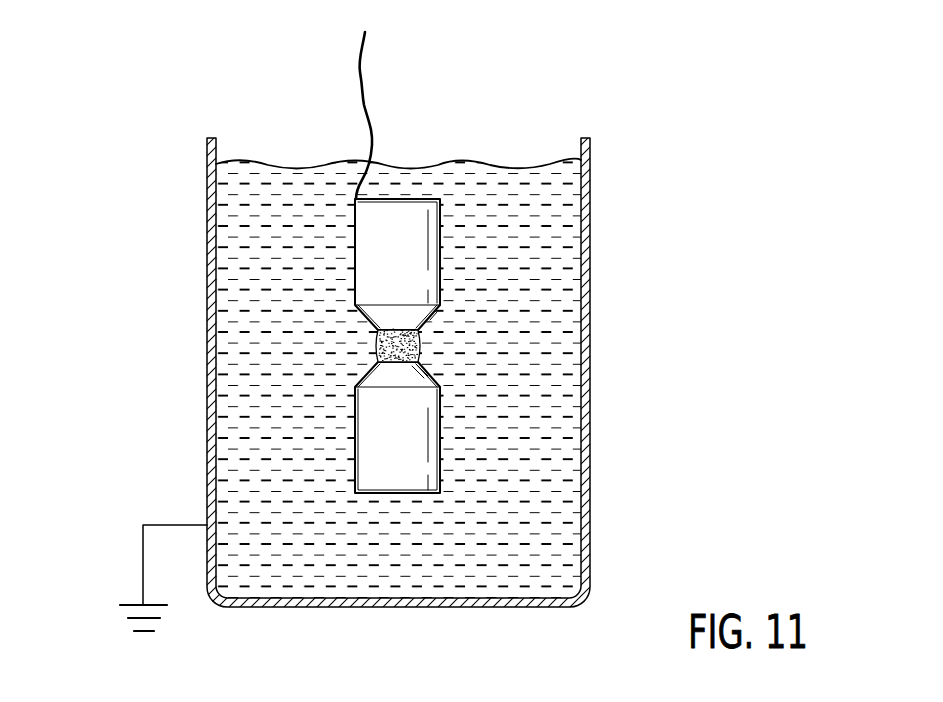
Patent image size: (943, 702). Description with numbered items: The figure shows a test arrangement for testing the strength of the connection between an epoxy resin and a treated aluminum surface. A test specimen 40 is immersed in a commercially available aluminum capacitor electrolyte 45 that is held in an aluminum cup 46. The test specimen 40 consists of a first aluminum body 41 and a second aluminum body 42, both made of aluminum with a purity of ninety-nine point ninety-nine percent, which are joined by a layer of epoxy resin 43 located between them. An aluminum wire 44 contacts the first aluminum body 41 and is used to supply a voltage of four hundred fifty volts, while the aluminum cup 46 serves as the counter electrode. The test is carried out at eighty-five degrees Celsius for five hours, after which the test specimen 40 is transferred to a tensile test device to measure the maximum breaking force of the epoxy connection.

The test specimen 40 is at (236, 352).
The first aluminum body 41 is at (372, 263).
The second aluminum body 42 is at (374, 424).
The layer of epoxy resin 43 is at (390, 341).
The aluminum wire 44 is at (364, 92).
The aluminum capacitor electrolyte 45 is at (556, 233).
The aluminum cup 46 is at (207, 200).